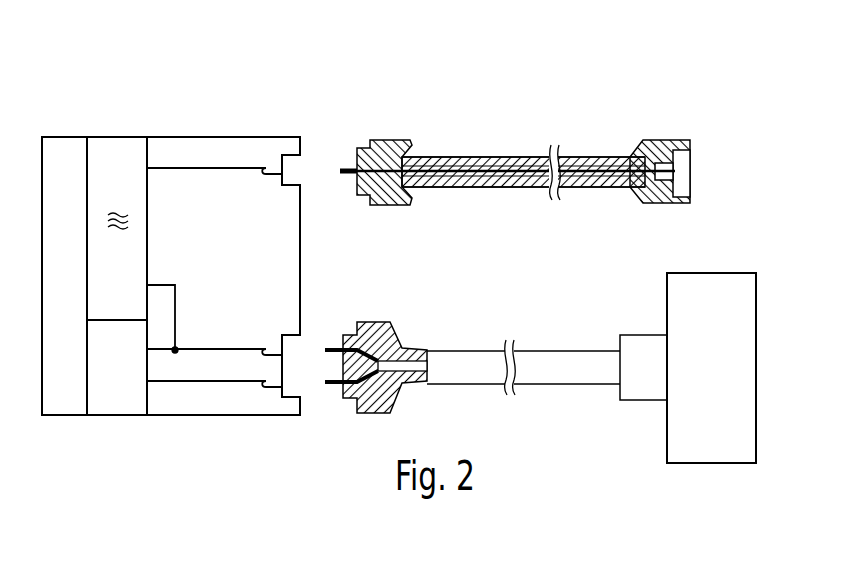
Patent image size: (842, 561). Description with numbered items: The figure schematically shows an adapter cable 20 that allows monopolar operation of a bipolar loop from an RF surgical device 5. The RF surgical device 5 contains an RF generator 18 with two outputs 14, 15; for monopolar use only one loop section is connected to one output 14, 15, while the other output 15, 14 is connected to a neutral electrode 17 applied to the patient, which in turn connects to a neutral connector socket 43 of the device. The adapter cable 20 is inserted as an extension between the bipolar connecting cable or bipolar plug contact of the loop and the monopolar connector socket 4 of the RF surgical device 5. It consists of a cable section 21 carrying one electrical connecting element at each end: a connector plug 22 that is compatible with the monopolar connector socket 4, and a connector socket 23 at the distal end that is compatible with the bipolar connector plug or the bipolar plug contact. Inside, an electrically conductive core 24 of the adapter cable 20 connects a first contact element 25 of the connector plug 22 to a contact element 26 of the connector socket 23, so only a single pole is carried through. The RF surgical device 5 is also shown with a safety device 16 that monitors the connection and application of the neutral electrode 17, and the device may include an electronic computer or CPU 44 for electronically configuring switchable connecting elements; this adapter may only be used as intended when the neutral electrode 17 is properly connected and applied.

The monopolar connector socket 4 is at (291, 165).
The RF surgical device 5 is at (193, 126).
The output 14 is at (150, 172).
The output 15 is at (151, 285).
The safety device 16 is at (114, 392).
The neutral electrode 17 is at (725, 379).
The RF generator 18 is at (114, 152).
The adapter cable 20 is at (578, 144).
The cable section 21 is at (513, 157).
The connector plug 22 is at (365, 198).
The connector socket 23 is at (684, 205).
The electrically conductive core 24 is at (474, 157).
The first contact element 25 is at (343, 168).
The contact element 26 is at (688, 165).
The neutral connector socket 43 is at (298, 390).
The CPU 44 is at (62, 392).